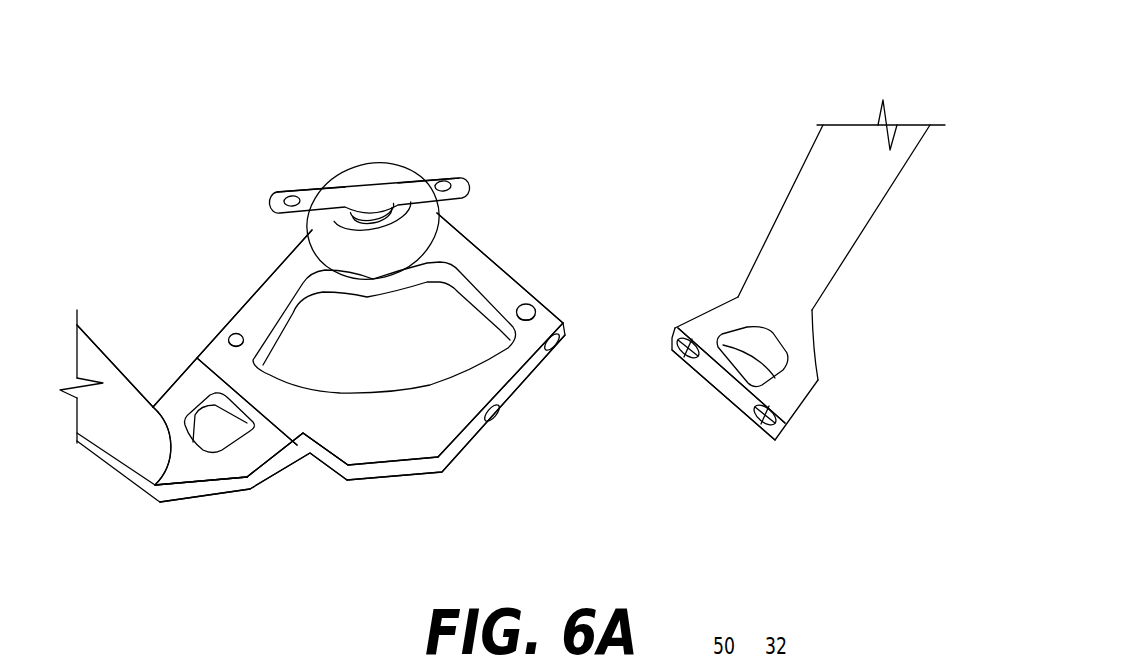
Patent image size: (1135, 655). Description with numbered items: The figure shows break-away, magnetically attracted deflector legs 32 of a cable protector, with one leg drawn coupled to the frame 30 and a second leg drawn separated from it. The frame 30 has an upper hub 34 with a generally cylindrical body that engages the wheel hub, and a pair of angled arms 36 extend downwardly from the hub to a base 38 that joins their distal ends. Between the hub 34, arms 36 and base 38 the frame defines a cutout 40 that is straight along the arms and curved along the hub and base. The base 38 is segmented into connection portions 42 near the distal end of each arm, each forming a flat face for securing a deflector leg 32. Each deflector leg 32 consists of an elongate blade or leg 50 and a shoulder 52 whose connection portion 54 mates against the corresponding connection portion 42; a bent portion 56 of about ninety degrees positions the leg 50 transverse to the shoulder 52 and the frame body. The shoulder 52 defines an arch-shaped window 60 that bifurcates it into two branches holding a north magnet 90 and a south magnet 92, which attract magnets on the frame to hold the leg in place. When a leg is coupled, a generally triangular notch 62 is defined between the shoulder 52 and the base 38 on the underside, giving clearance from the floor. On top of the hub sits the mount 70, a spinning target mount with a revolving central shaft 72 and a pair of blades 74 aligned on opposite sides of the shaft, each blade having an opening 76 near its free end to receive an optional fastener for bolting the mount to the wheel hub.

The frame 30 is at (517, 280).
The deflector leg 32 is at (132, 475).
The upper hub 34 is at (390, 172).
The arm 36 is at (473, 262).
The base 38 is at (413, 453).
The cutout 40 is at (293, 362).
The connection portion 42 is at (527, 387).
The leg 50 is at (93, 437).
The shoulder 52 is at (198, 488).
The connection portion 54 is at (722, 390).
The bent portion 56 is at (158, 488).
The window 60 is at (740, 358).
The notch 62 is at (307, 468).
The mount 70 is at (375, 190).
The central shaft 72 is at (363, 190).
The blade 74 is at (317, 190).
The opening 76 is at (288, 190).
The north magnet 90 is at (688, 350).
The south magnet 92 is at (762, 420).